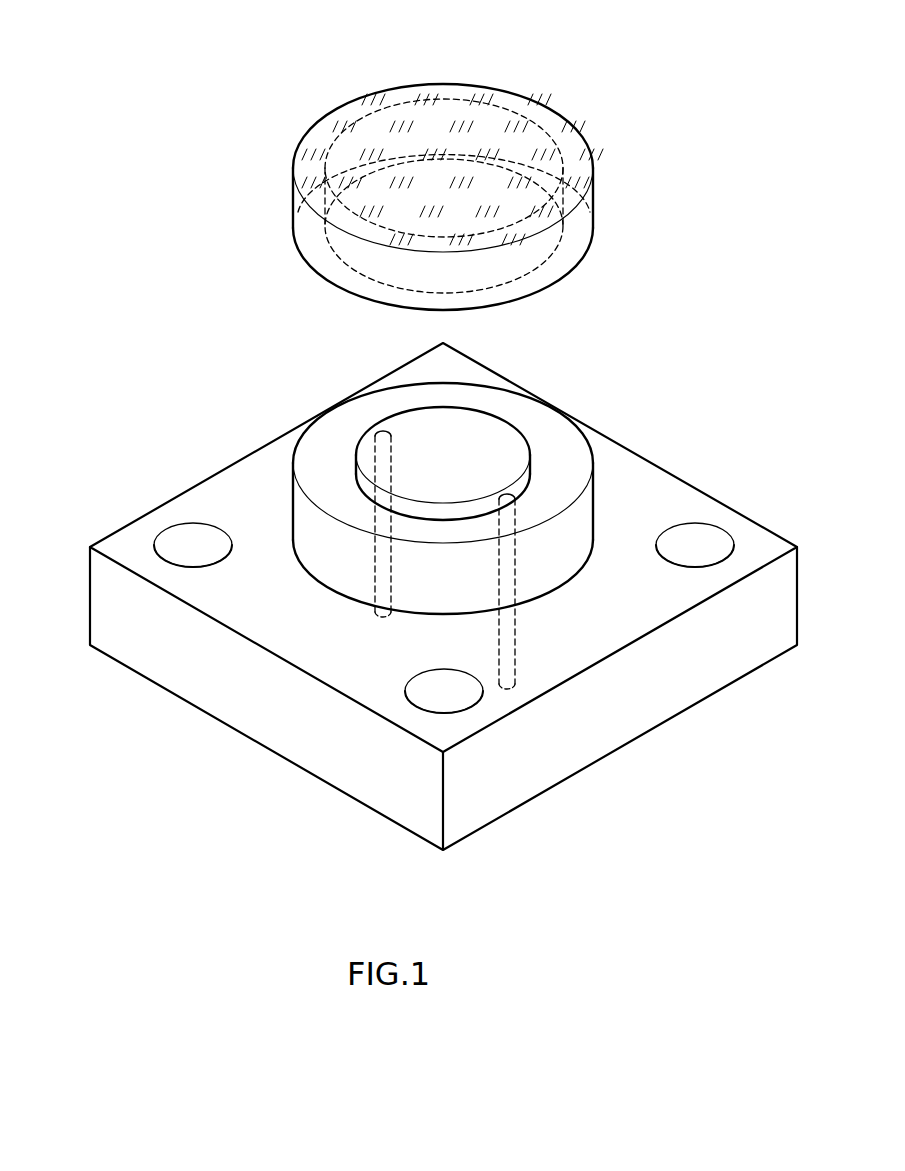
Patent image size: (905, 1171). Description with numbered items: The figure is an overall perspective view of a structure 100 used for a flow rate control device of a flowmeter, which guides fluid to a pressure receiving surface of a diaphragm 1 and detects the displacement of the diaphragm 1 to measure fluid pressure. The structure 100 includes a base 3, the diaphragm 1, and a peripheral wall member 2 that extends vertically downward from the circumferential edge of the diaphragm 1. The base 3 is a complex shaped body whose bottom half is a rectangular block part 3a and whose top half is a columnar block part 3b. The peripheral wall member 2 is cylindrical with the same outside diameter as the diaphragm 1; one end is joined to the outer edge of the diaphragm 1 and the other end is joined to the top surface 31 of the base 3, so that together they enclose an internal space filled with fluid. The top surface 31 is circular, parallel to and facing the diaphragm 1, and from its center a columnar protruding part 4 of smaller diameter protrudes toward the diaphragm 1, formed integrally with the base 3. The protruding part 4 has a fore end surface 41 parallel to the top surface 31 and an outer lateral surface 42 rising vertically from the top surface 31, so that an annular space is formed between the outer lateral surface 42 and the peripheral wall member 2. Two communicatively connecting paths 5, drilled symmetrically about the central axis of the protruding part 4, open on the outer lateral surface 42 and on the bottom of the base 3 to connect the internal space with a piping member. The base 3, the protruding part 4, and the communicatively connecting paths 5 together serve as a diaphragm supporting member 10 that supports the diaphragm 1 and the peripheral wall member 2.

The structure 100 is at (195, 82).
The diaphragm 1 is at (443, 170).
The peripheral wall member 2 is at (293, 198).
The diaphragm supporting member 10 is at (672, 349).
The base 3 is at (797, 463).
The rectangular block part 3a is at (740, 510).
The columnar block part 3b is at (594, 513).
The top surface 31 is at (332, 440).
The protruding part 4 is at (507, 413).
The fore end surface 41 is at (403, 433).
The outer lateral surface 42 is at (532, 470).
The communicatively connecting path 5 is at (373, 572).